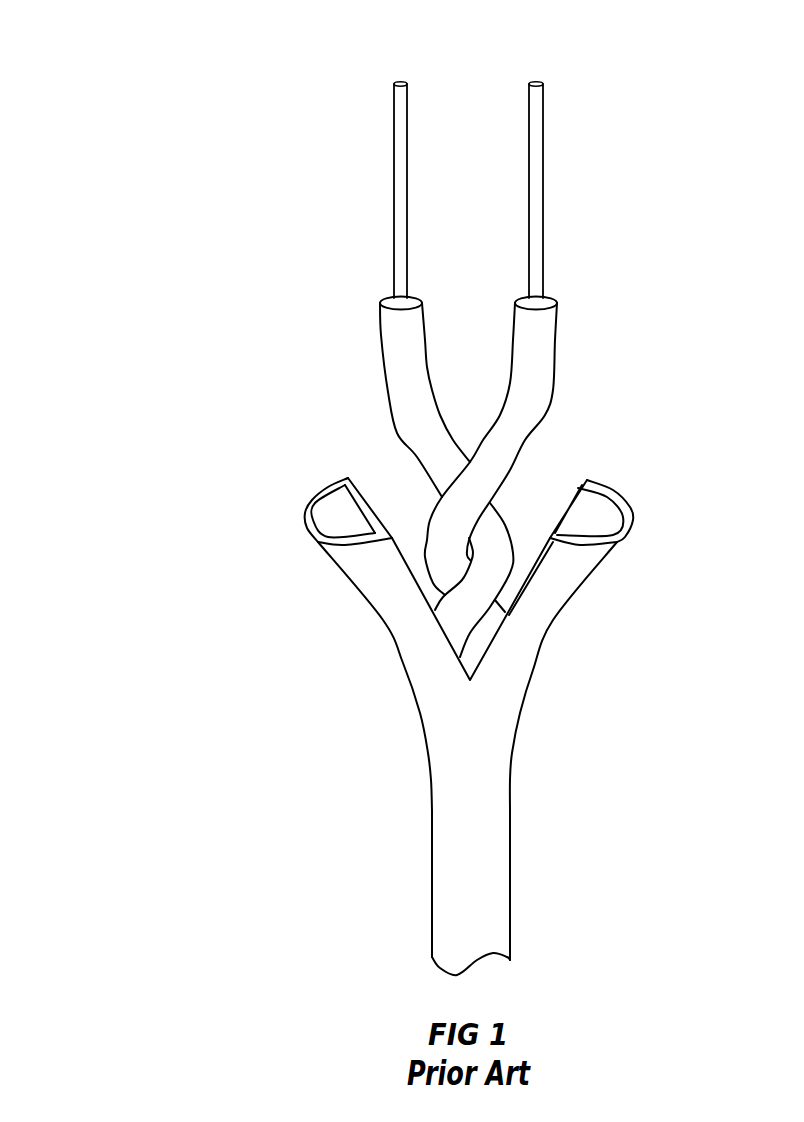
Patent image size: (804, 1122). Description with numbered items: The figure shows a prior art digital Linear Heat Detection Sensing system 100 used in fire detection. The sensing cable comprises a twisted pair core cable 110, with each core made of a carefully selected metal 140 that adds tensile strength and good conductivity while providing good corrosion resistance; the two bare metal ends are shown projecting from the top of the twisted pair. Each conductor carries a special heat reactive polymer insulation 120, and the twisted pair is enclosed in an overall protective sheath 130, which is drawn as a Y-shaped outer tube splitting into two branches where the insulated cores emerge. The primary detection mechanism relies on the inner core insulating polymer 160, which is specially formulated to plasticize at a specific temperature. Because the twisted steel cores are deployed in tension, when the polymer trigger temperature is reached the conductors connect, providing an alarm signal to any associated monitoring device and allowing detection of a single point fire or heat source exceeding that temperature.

The digital Linear Heat Detection Sensing (LHDS) system 100 is at (195, 78).
The twisted pair core cable 110 is at (423, 457).
The heat reactive polymer insulation 120 is at (385, 377).
The overall protective sheath 130 is at (450, 800).
The metal 140 is at (543, 185).
The inner core insulating polymer 160 is at (550, 297).